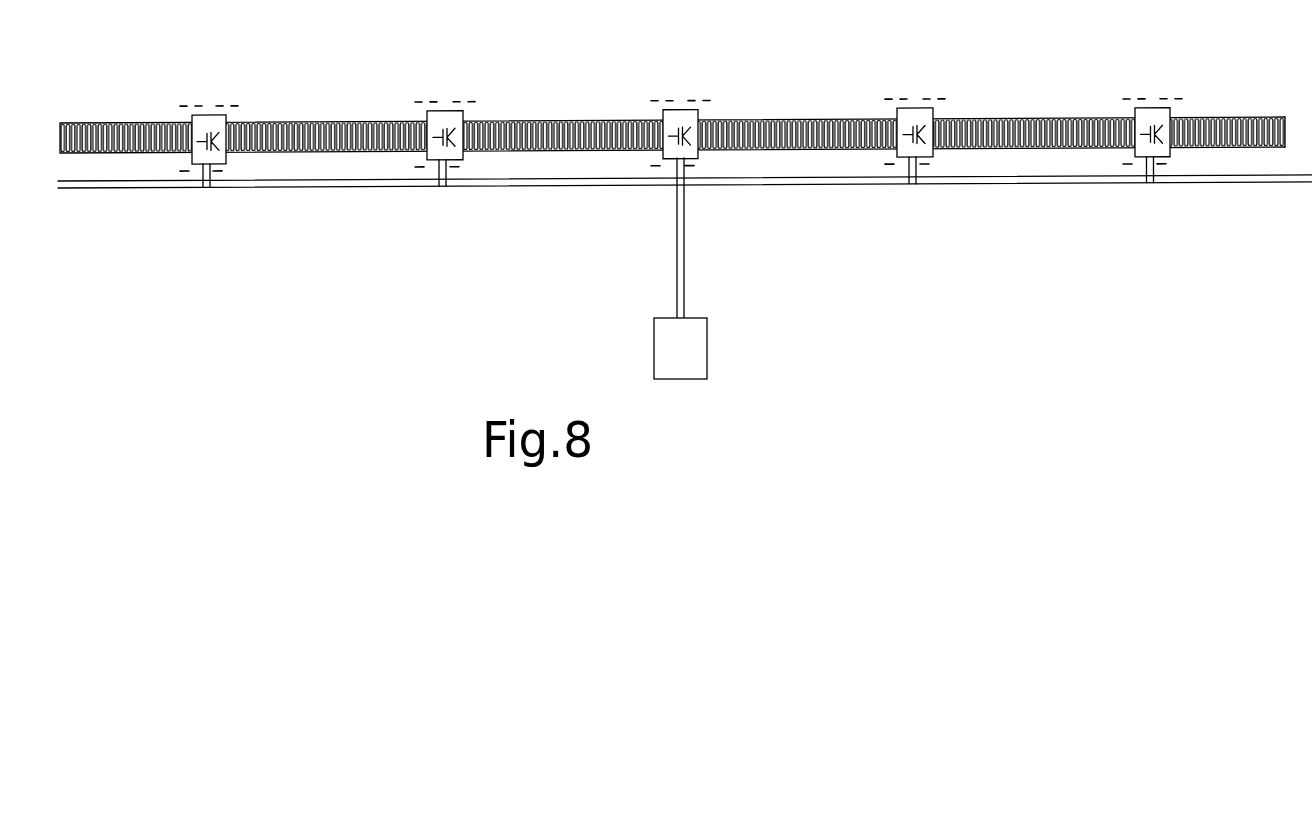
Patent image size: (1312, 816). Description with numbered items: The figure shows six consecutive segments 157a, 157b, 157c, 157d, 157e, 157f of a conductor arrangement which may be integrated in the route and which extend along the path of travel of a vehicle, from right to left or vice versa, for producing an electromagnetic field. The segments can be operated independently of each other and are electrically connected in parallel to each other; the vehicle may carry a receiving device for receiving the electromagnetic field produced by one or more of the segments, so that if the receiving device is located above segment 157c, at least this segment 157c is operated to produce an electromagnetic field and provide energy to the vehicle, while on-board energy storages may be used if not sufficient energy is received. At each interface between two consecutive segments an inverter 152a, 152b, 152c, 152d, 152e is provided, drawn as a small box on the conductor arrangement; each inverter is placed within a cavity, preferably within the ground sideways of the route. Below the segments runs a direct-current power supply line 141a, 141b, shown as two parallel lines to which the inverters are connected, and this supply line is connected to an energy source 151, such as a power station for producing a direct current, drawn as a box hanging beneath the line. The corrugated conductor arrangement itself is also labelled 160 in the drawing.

The segment of conductor arrangement 157a is at (100, 127).
The segment of conductor arrangement 157b is at (323, 125).
The segment of conductor arrangement 157c is at (563, 127).
The segment of conductor arrangement 157d is at (800, 120).
The segment of conductor arrangement 157e is at (1028, 120).
The segment of conductor arrangement 157f is at (1265, 117).
The inverter 152a is at (232, 171).
The inverter 152b is at (469, 169).
The inverter 152c is at (657, 166).
The inverter 152d is at (929, 95).
The inverter 152e is at (1159, 85).
The DC power supply line 141a is at (723, 190).
The DC power supply line 141b is at (871, 194).
The corrugated tube 160 is at (981, 158).
The energy source 151 is at (715, 356).